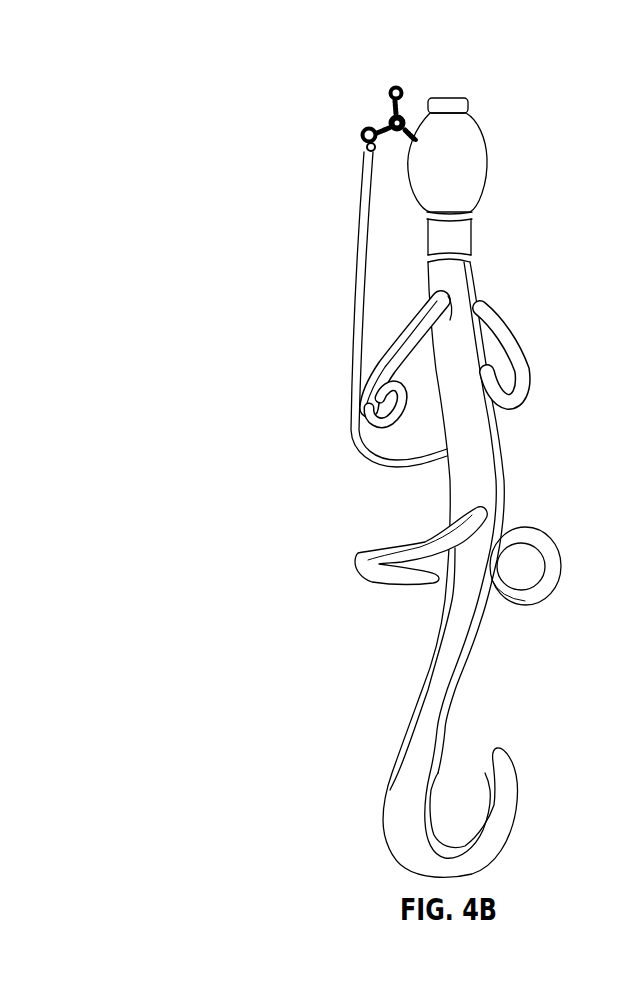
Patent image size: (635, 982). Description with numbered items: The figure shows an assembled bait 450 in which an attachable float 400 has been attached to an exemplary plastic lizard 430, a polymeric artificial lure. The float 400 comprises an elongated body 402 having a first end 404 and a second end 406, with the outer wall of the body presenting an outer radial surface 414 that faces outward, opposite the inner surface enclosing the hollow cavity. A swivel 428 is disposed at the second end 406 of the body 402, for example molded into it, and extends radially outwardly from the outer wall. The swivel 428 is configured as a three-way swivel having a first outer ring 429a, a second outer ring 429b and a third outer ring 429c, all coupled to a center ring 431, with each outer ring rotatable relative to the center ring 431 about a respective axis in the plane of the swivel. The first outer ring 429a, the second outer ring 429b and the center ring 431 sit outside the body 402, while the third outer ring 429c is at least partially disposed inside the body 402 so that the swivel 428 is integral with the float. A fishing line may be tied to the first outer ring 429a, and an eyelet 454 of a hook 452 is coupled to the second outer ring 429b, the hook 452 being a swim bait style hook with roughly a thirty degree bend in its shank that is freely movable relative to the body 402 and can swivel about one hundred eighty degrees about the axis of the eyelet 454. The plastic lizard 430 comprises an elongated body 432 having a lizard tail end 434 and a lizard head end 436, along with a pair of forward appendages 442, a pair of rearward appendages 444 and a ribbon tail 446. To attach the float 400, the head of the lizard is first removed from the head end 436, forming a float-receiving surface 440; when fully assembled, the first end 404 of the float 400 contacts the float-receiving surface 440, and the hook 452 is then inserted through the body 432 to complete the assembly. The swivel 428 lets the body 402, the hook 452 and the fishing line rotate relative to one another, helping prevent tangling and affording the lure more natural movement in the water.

The attachable float 400 is at (510, 130).
The elongated body 402 is at (472, 190).
The first end 404 is at (472, 264).
The second end 406 is at (462, 96).
The outer radial surface 414 is at (473, 236).
The swivel 428 is at (370, 109).
The first outer ring 429a is at (398, 84).
The second outer ring 429b is at (360, 133).
The third outer ring 429c is at (410, 116).
The plastic lizard 430 is at (543, 267).
The center ring 431 is at (372, 114).
The elongated body 432 is at (499, 510).
The lizard tail end 434 is at (457, 681).
The lizard head end 436 is at (356, 320).
The float-receiving surface 440 is at (428, 257).
The forward appendages 442 is at (380, 395).
The rearward appendages 444 is at (360, 558).
The ribbon tail 446 is at (400, 783).
The assembled bait 450 is at (282, 44).
The hook 452 is at (350, 286).
The eyelet 454 is at (362, 158).